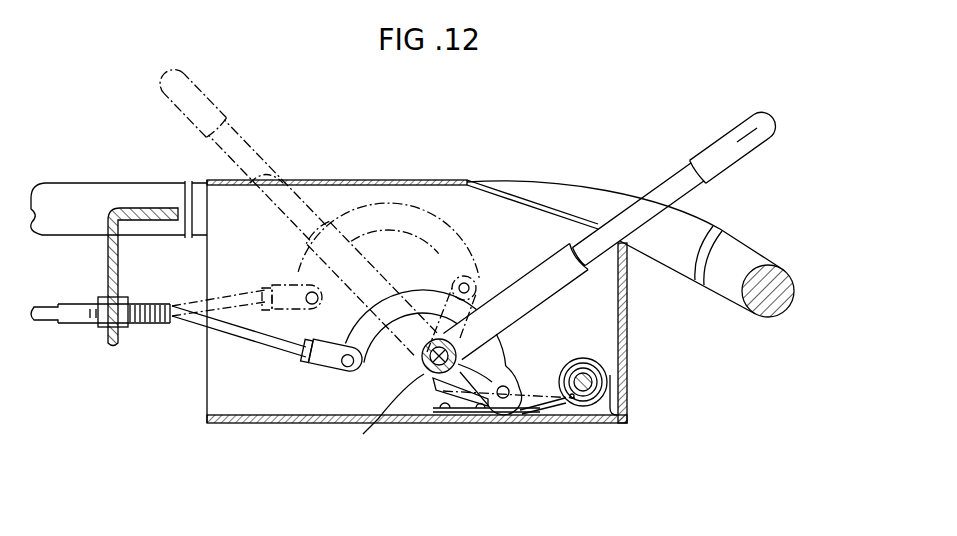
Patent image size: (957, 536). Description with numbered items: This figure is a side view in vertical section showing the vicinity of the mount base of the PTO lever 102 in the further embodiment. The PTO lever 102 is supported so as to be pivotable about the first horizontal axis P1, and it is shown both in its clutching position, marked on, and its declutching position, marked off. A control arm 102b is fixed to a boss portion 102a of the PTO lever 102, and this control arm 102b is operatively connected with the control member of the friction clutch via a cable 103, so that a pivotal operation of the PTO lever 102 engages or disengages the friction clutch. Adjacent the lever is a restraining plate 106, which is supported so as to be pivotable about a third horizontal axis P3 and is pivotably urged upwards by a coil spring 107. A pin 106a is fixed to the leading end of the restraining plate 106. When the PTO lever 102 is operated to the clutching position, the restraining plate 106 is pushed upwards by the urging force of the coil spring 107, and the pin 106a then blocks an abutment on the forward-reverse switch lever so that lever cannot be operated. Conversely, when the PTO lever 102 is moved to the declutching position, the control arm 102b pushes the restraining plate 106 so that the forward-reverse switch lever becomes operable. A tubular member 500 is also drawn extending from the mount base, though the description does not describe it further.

The PTO lever 102 is at (253, 143).
The boss portion 102a is at (435, 382).
The control arm 102b is at (447, 381).
The cable 103 is at (250, 338).
The restraining plate 106 is at (482, 409).
The pin 106a is at (434, 407).
The coil spring 107 is at (613, 368).
The handle tube 500 is at (743, 250).
The first horizontal axis P1 is at (421, 357).
The third horizontal axis P3 is at (572, 396).